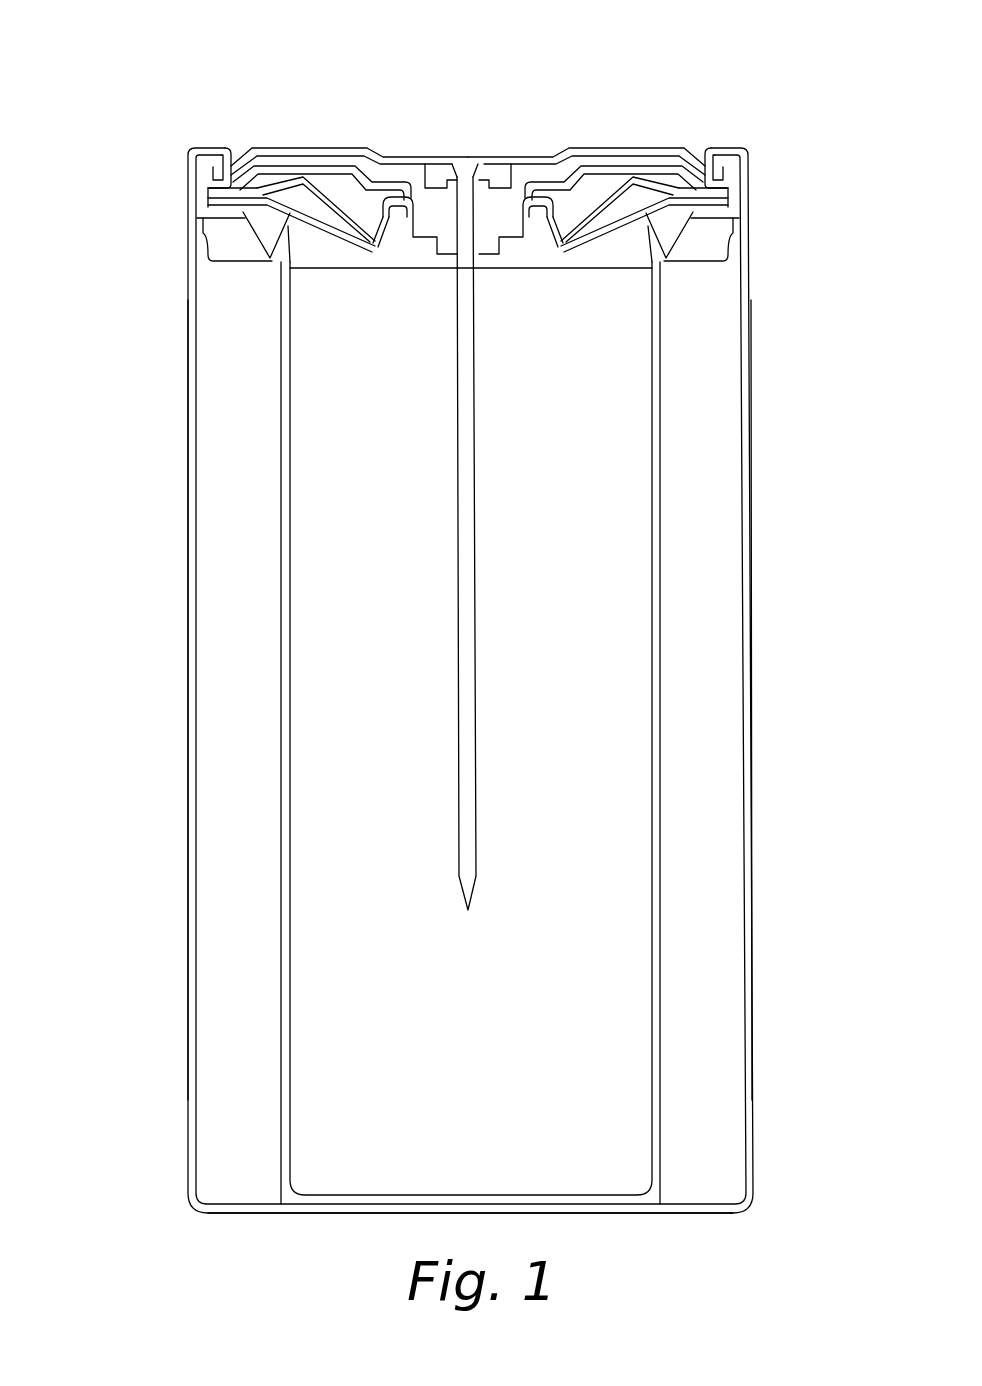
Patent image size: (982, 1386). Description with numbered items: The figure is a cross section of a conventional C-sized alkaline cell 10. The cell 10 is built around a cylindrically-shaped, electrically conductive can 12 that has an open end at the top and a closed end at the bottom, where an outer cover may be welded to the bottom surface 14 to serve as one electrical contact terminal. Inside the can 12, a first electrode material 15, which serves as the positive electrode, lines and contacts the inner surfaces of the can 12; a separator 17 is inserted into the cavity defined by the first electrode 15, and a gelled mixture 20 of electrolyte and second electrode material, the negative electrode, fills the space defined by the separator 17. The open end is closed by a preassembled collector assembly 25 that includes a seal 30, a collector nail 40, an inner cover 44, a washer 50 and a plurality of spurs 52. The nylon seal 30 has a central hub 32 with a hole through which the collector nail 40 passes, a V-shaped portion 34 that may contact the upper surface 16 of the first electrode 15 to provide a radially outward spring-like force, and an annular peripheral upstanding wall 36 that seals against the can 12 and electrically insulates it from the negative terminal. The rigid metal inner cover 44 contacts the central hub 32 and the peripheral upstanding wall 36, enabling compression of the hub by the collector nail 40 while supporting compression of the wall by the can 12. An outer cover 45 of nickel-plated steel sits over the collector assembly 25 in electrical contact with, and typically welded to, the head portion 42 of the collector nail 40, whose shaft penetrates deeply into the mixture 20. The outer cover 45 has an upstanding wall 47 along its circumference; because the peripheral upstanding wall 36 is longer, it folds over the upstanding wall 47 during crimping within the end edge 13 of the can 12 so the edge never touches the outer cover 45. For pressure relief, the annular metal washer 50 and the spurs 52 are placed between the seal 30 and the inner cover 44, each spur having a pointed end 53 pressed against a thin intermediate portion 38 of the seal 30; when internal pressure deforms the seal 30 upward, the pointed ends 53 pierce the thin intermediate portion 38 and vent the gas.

The alkaline cell 10 is at (513, 52).
The can 12 is at (752, 355).
The end edge 13 is at (230, 148).
The bottom surface 14 is at (250, 1214).
The first electrode material 15 is at (215, 506).
The upper surface 16 is at (207, 250).
The separator 17 is at (655, 522).
The mixture 20 is at (610, 662).
The collector assembly 25 is at (106, 192).
The seal 30 is at (205, 210).
The central hub 32 is at (444, 218).
The V-shaped portion 34 is at (215, 236).
The peripheral upstanding wall 36 is at (200, 177).
The thin intermediate portion 38 is at (533, 208).
The collector nail 40 is at (468, 833).
The head portion 42 is at (467, 172).
The inner cover 44 is at (342, 148).
The outer cover 45 is at (315, 148).
The upstanding wall 47 is at (722, 176).
The washer 50 is at (598, 232).
The spurs 52 is at (615, 215).
The pointed end 53 is at (557, 243).